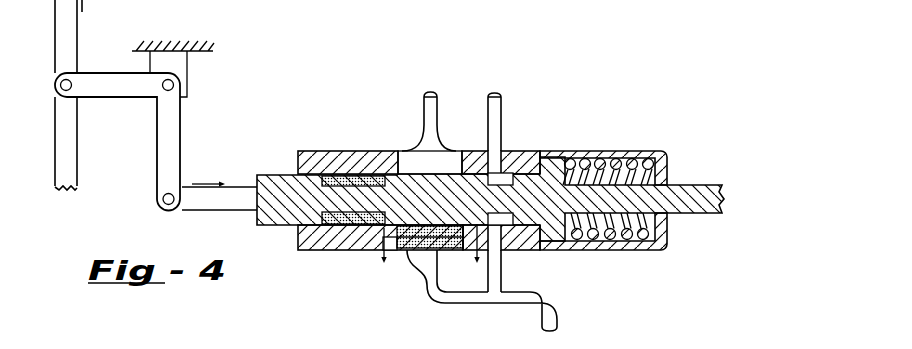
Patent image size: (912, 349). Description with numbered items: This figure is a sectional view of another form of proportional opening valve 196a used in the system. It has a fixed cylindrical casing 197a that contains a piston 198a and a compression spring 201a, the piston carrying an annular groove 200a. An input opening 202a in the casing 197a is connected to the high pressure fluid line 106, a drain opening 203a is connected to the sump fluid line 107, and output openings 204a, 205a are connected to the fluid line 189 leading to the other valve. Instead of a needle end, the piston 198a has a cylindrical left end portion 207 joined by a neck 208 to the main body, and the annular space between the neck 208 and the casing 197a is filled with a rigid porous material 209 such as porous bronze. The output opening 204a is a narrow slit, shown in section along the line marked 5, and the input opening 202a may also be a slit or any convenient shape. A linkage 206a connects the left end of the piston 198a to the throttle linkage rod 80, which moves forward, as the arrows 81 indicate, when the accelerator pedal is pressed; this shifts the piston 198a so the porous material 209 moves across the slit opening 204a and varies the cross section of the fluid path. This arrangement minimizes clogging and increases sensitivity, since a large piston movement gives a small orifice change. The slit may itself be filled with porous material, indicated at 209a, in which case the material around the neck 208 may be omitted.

The throttle linkage rod 80 is at (79, 183).
The arrows 81 is at (83, 13).
The linkage 206a is at (187, 126).
The cylindrical left end portion 207 is at (278, 225).
The piston 198a is at (417, 185).
The annular groove 200a is at (511, 175).
The proportional opening valve 196a is at (347, 94).
The cylindrical casing 197a is at (341, 151).
The input opening 202a is at (434, 158).
The rigid porous material 209 is at (338, 180).
The neck 208 is at (352, 210).
The porous material in slit opening 209a is at (408, 252).
The high pressure fluid line 106 is at (424, 99).
The sump fluid line 107 is at (503, 103).
The drain opening 203a is at (503, 172).
The output opening 205a is at (503, 252).
The compression spring 201a is at (620, 154).
The output opening 204a is at (428, 276).
The fluid line 189 is at (559, 282).
The Fig. 5 section line 5 is at (430, 253).